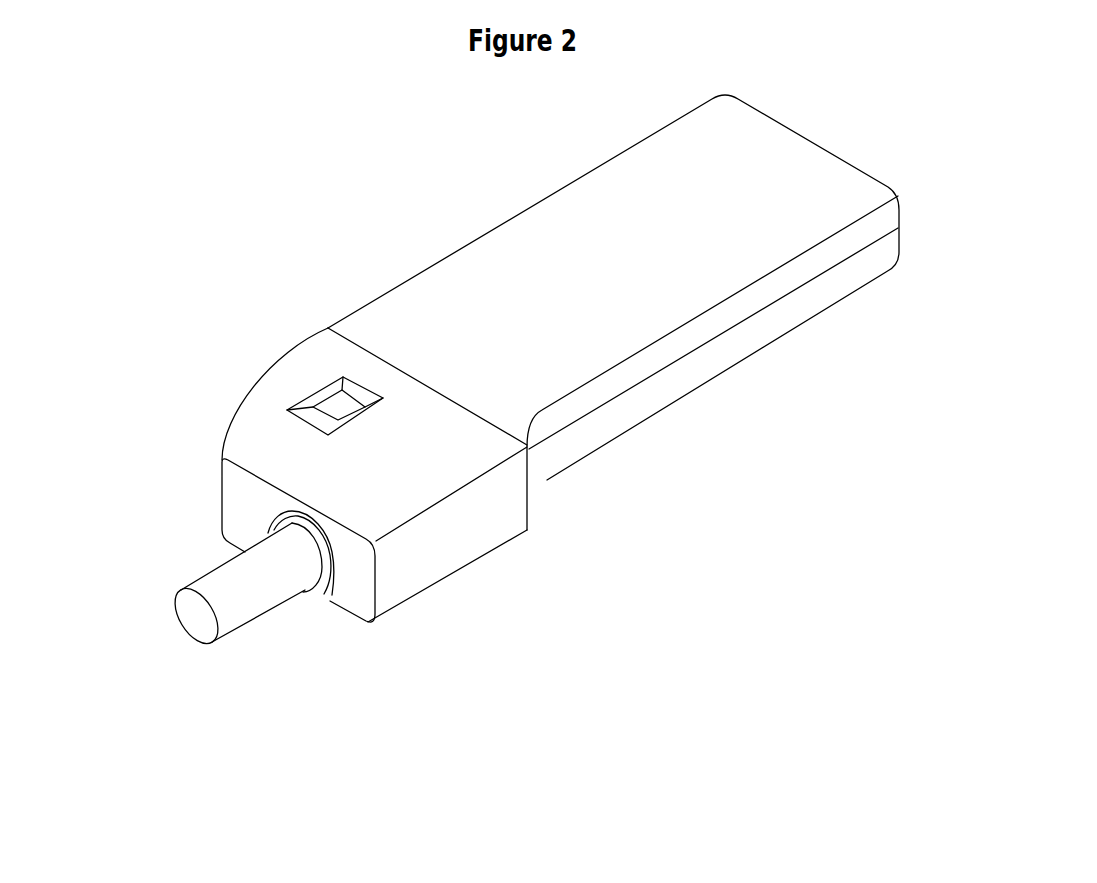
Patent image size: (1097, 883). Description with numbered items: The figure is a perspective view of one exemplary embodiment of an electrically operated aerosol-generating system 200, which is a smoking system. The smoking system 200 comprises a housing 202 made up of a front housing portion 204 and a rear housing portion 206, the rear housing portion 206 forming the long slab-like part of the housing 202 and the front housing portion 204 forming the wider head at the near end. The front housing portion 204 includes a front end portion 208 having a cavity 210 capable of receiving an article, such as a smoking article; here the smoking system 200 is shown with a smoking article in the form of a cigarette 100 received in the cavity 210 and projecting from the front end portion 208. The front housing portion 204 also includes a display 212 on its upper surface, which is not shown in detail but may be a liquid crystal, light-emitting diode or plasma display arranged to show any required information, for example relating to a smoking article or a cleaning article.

The cigarette 100 is at (238, 597).
The electrically operated aerosol-generating system 200 is at (433, 203).
The housing 202 is at (747, 160).
The front housing portion 204 is at (457, 552).
The rear housing portion 206 is at (808, 316).
The front end portion 208 is at (248, 512).
The cavity 210 is at (332, 595).
The display 212 is at (337, 400).